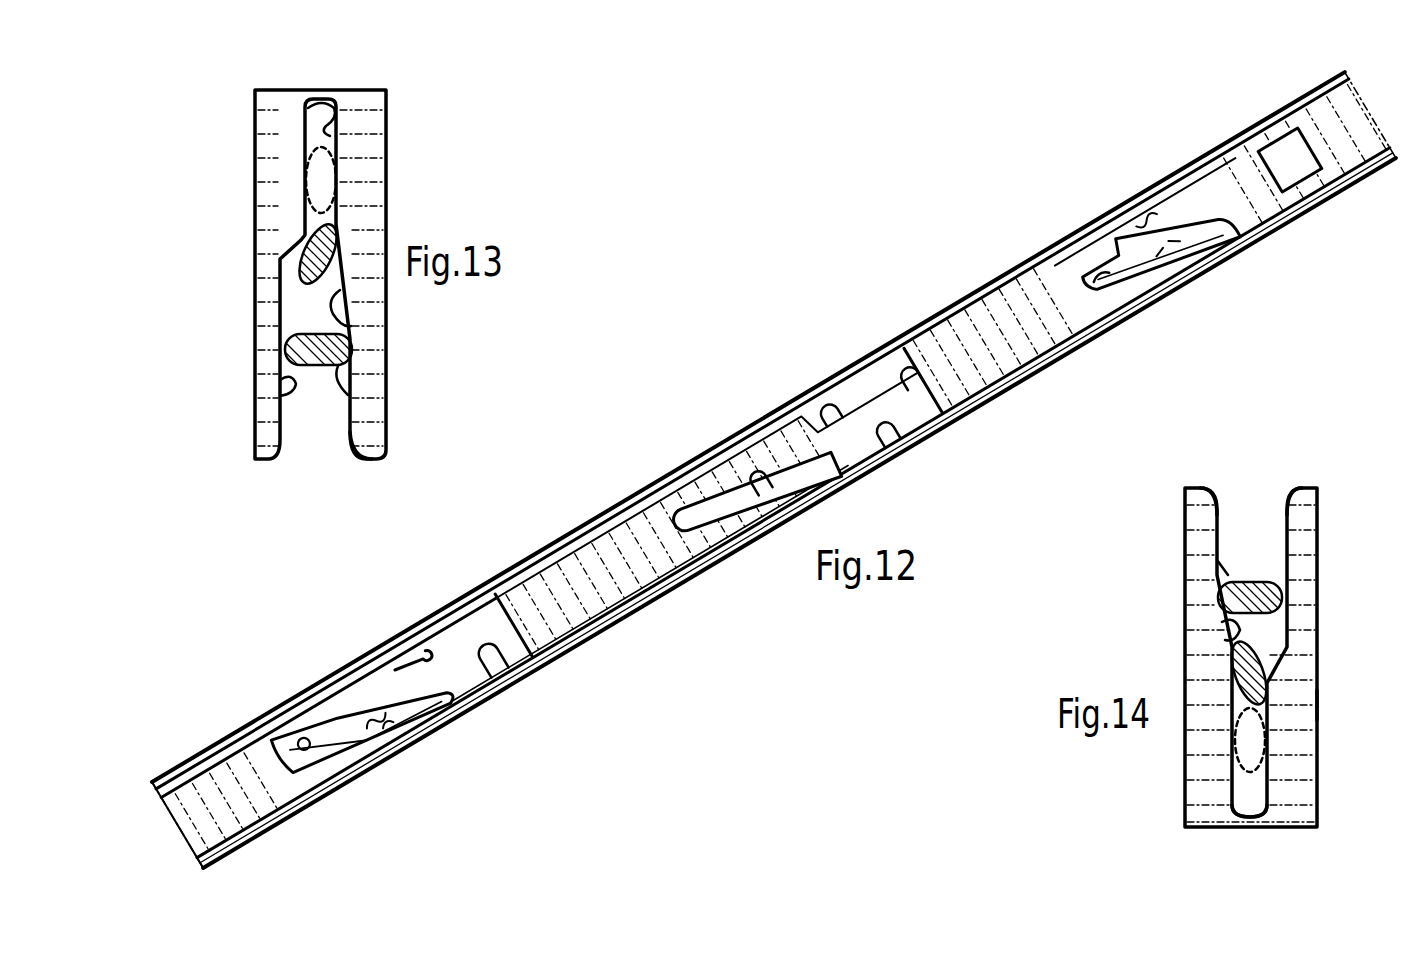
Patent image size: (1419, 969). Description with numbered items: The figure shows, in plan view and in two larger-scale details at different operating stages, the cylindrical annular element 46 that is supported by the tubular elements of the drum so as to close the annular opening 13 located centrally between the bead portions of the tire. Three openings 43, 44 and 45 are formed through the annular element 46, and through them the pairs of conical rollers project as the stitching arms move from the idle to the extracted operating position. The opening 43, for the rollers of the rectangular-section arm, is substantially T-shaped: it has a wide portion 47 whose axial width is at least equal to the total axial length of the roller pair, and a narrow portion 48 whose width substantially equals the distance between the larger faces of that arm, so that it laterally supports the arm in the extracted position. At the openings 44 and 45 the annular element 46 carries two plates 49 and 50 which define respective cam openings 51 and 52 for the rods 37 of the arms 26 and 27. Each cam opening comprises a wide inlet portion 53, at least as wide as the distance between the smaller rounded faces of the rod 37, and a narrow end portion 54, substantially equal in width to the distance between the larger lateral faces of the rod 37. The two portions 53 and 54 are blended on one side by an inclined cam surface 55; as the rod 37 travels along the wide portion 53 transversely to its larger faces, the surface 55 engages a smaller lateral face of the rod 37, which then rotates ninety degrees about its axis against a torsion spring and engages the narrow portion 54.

In FIG. 12, the annular opening 13 is at (830, 410).
In FIG. 13, the arm 26 is at (353, 394).
In FIG. 14, the arm 27 is at (1227, 572).
In FIG. 13, the rod 37 is at (326, 182).
In FIG. 14, the rod 37 is at (1252, 585).
In FIG. 12, the opening 43 is at (889, 440).
In FIG. 12, the opening 44 is at (495, 675).
In FIG. 12, the opening 45 is at (1283, 190).
In FIG. 12, the cylindrical annular element 46 is at (173, 822).
In FIG. 12, the wide portion 47 is at (905, 372).
In FIG. 12, the narrow portion 48 is at (763, 490).
In FIG. 12, the plate 49 is at (375, 766).
In FIG. 13, the plate 49 is at (243, 272).
In FIG. 12, the plate 50 is at (1164, 257).
In FIG. 14, the plate 50 is at (1317, 703).
In FIG. 12, the cam opening 51 is at (390, 713).
In FIG. 13, the cam opening 51 is at (283, 388).
In FIG. 12, the cam opening 52 is at (1163, 250).
In FIG. 14, the cam opening 52 is at (1280, 570).
In FIG. 12, the wide inlet portion 53 is at (417, 683).
In FIG. 13, the wide inlet portion 53 is at (347, 428).
In FIG. 14, the wide inlet portion 53 is at (1220, 512).
In FIG. 12, the narrow end portion 54 is at (293, 708).
In FIG. 13, the narrow end portion 54 is at (312, 104).
In FIG. 14, the narrow end portion 54 is at (1260, 795).
In FIG. 12, the inclined cam surface 55 is at (370, 723).
In FIG. 13, the inclined cam surface 55 is at (352, 328).
In FIG. 14, the inclined cam surface 55 is at (1237, 630).